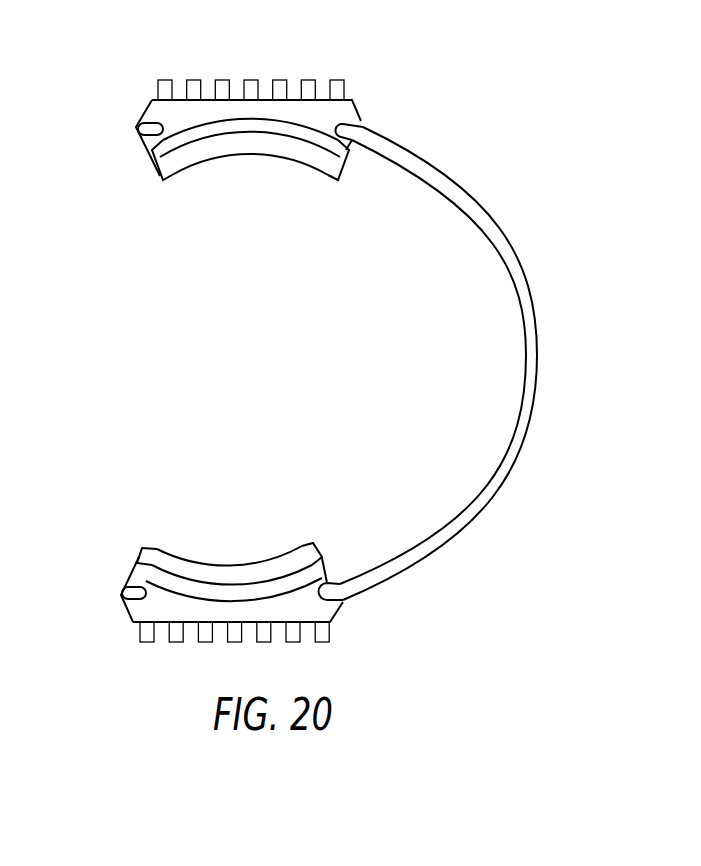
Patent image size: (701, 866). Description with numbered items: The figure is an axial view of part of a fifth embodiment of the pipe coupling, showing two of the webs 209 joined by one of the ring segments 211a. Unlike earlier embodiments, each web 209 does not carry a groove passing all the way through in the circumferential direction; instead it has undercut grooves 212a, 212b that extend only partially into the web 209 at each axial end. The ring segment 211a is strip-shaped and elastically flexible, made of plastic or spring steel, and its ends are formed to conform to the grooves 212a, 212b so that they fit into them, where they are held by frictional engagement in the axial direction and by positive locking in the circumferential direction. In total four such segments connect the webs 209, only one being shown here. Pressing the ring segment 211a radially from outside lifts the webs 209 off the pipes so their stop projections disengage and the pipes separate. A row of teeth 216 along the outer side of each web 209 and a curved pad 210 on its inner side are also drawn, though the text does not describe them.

The web 209 is at (357, 112).
The curved pad 210 is at (220, 170).
The ring segment 211a is at (500, 232).
The undercut groove 212a is at (350, 142).
The undercut groove 212b is at (153, 150).
The teeth 216 is at (223, 80).